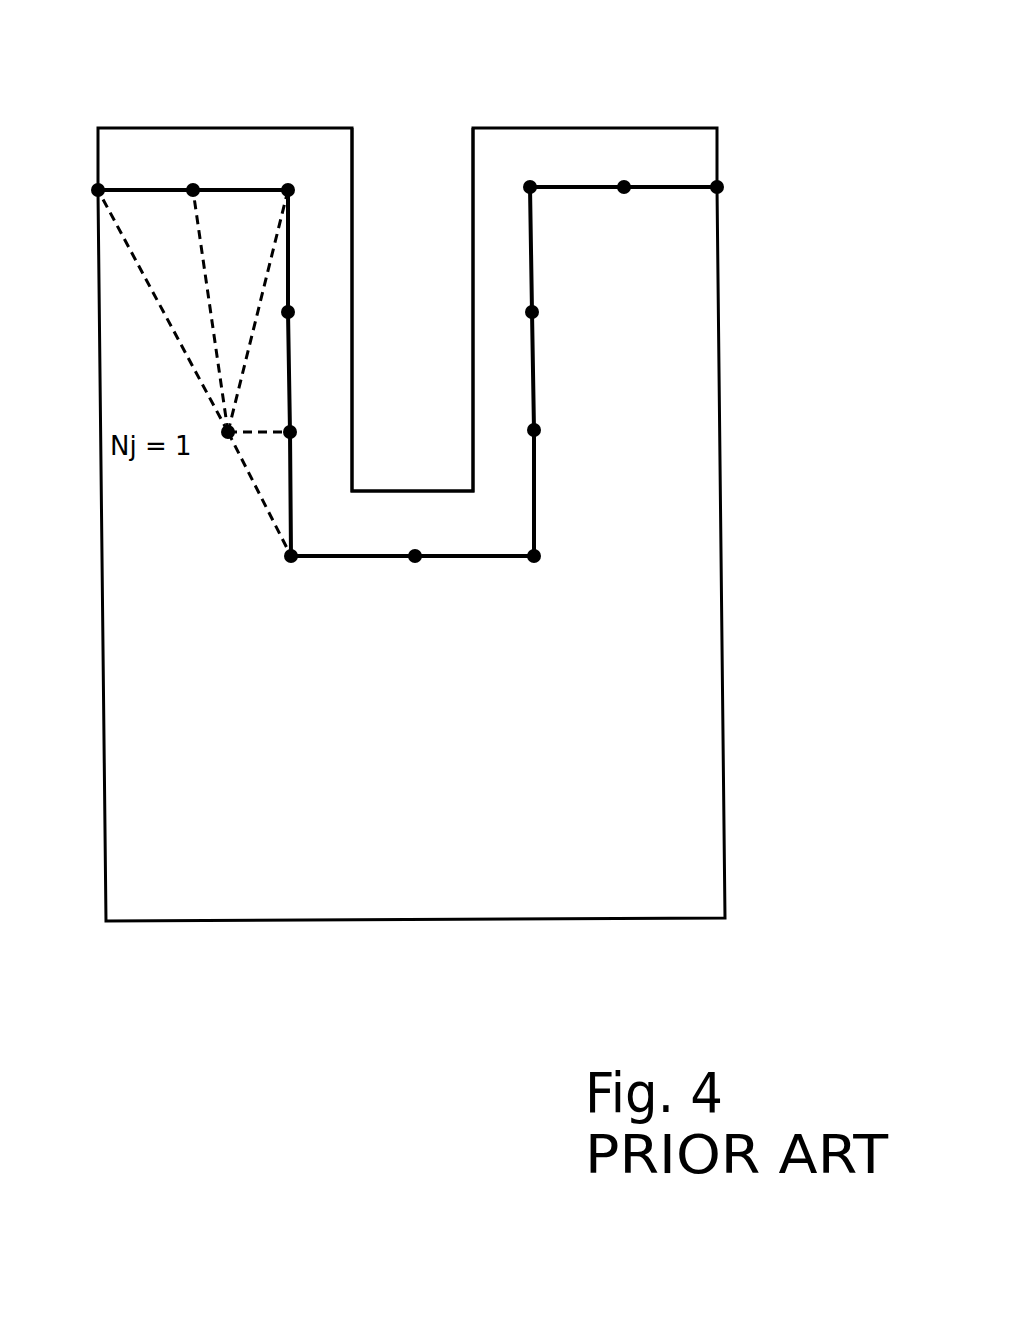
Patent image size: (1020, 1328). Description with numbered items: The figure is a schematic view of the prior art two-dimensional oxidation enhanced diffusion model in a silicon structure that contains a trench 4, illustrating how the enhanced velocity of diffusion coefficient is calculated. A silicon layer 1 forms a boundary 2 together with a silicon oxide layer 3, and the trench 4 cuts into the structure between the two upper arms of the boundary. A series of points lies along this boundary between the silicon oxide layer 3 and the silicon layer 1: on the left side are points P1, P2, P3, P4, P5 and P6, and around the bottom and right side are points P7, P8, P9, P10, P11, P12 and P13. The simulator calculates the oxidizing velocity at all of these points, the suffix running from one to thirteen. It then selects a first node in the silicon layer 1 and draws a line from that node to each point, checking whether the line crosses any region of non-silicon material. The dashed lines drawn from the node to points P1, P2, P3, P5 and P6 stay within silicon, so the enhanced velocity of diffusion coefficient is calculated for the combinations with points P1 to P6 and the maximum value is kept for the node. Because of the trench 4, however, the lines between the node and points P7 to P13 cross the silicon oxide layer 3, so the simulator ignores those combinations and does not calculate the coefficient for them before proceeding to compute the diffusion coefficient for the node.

The silicon layer 1 is at (702, 600).
The boundary 2 is at (142, 190).
The silicon oxide layer 3 is at (520, 145).
The trench 4 is at (432, 312).
The first point P1 is at (72, 173).
The point P2 is at (187, 173).
The point P3 is at (306, 173).
The point P4 is at (309, 333).
The point P5 is at (311, 450).
The point P6 is at (254, 572).
The point P7 is at (403, 578).
The point P8 is at (561, 569).
The point P9 is at (561, 445).
The point P10 is at (569, 323).
The point P11 is at (564, 210).
The point P12 is at (622, 170).
The point P13 is at (750, 210).